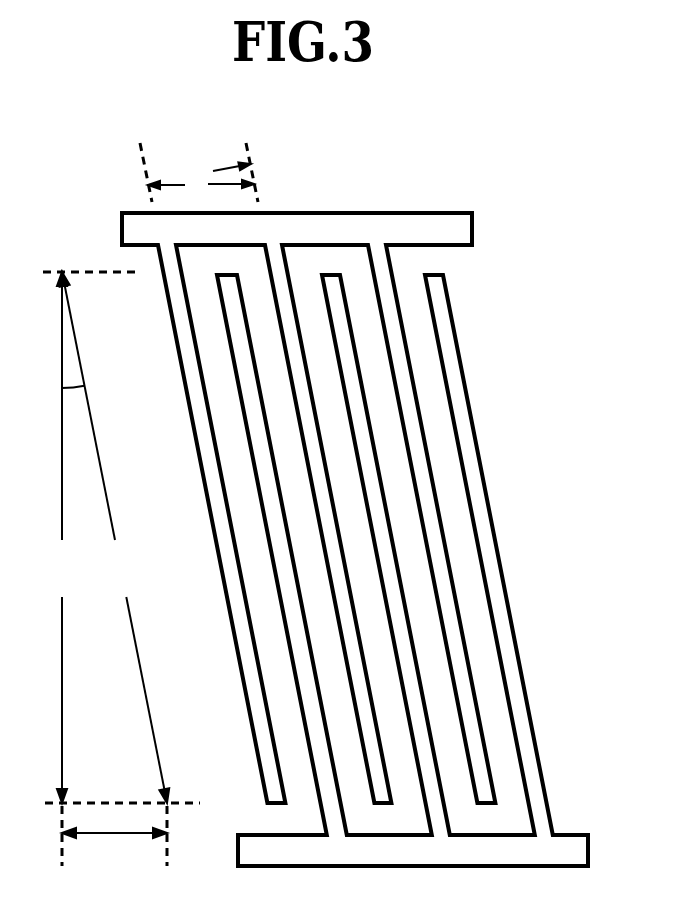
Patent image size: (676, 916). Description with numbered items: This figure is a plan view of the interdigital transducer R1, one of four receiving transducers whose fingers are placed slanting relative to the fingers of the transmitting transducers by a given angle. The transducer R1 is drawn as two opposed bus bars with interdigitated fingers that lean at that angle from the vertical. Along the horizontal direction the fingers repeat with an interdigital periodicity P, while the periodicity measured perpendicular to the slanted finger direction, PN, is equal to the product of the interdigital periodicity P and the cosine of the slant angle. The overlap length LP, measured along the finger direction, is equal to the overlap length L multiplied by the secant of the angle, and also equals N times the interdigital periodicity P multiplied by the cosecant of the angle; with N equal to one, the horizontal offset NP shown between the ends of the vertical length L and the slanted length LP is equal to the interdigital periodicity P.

The interdigital transducer R1 is at (355, 509).
The overlap length L is at (121, 537).
The overlap length along the finger direction LP is at (114, 537).
The N times the interdigital periodicity NP is at (114, 845).
The interdigital periodicity P is at (199, 173).
The interdigital periodicity along the vertical direction to the finger direction PN is at (217, 157).